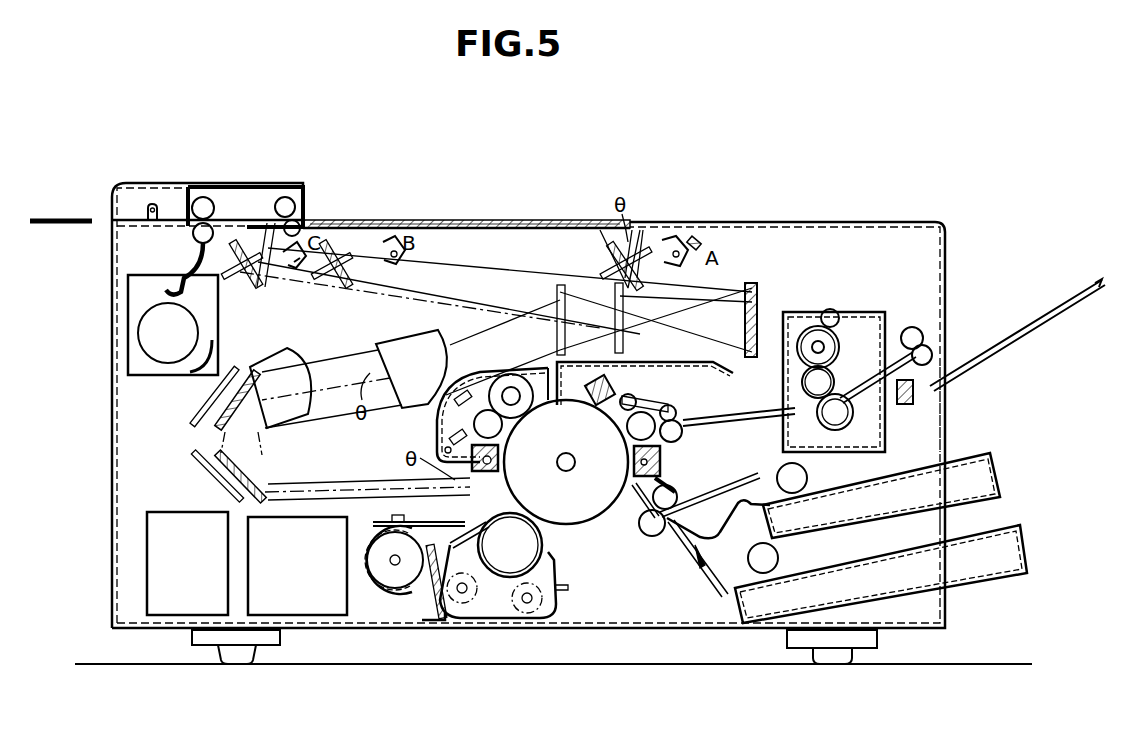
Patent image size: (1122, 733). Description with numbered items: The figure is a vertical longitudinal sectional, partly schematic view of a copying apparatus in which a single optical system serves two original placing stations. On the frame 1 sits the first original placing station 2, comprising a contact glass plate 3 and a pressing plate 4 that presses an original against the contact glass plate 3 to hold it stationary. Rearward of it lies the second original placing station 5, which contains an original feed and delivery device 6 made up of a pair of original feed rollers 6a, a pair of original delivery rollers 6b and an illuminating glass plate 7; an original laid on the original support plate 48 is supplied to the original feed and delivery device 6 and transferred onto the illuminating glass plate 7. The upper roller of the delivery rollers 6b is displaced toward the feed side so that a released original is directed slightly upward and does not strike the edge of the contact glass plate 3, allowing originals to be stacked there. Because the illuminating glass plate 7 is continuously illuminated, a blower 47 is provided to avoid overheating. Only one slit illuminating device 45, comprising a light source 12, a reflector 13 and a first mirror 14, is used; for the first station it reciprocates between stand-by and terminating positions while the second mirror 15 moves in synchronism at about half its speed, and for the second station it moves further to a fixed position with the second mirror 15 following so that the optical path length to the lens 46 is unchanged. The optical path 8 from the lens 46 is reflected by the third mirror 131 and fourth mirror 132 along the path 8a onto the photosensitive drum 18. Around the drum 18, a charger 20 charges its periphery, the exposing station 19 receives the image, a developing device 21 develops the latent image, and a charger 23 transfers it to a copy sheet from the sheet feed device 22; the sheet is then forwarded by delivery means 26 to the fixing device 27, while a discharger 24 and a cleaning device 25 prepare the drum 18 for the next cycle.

The frame 1 is at (857, 222).
The first original placing station 2 is at (563, 221).
The contact glass plate 3 is at (428, 220).
The pressing plate 4 is at (152, 183).
The second original placing station 5 is at (264, 184).
The original feed and delivery device 6 is at (200, 196).
The pair of original feed rollers 6a is at (214, 205).
The pair of original delivery rollers 6b is at (302, 209).
The illuminating glass plate 7 is at (258, 262).
The optical path 8 is at (475, 280).
The optical path to drum 8a is at (362, 485).
The light source 12 is at (648, 238).
The reflector 13 is at (690, 236).
The first mirror 14 is at (600, 255).
The second mirror 15 is at (758, 294).
The photosensitive drum 18 is at (605, 502).
The exposing station 19 is at (500, 478).
The charger 20 is at (482, 470).
The developing device 21 is at (553, 553).
The sheet feed device 22 is at (1000, 464).
The charger 23 is at (662, 460).
The discharger 24 is at (604, 398).
The cleaning device 25 is at (524, 400).
The delivery means 26 is at (660, 406).
The fixing device 27 is at (782, 364).
The slit illuminating device 45 is at (700, 242).
The lens 46 is at (376, 347).
The blower 47 is at (135, 309).
The original support plate 48 is at (57, 216).
The third mirror 131 is at (233, 392).
The fourth mirror 132 is at (232, 503).